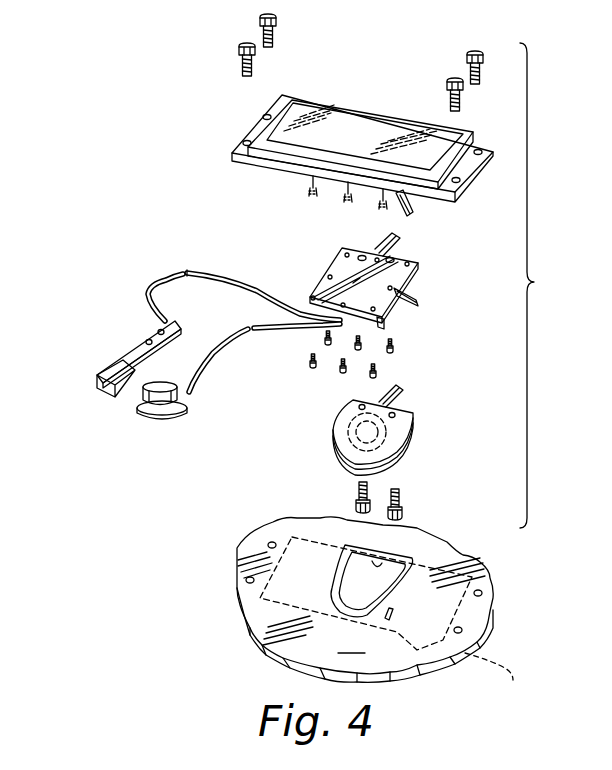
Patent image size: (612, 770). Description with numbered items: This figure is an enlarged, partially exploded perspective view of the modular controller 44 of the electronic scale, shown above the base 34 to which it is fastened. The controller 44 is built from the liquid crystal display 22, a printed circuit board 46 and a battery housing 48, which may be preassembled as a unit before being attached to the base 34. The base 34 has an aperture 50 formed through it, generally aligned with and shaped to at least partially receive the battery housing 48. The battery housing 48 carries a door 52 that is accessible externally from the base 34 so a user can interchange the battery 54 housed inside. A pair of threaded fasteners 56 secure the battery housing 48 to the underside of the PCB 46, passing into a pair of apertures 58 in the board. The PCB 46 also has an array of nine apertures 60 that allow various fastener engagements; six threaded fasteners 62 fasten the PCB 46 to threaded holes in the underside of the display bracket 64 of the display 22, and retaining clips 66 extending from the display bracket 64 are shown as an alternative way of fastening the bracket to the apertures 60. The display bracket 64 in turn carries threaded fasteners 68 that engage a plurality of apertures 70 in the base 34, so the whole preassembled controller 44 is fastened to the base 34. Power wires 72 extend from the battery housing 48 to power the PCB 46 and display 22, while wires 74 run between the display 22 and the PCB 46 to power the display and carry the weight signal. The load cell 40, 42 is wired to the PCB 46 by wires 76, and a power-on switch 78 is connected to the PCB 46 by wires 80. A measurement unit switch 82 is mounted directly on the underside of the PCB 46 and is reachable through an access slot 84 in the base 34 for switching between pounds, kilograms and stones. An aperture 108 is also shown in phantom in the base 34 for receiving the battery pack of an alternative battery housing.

The liquid crystal display 22 is at (363, 127).
The base 34 is at (351, 643).
The load cell 40 is at (175, 347).
The load cell 42 is at (122, 362).
The controller 44 is at (544, 285).
The printed circuit board 46 is at (415, 285).
The battery housing 48 is at (389, 419).
The aperture 50 is at (380, 564).
The door 52 is at (397, 465).
The battery 54 is at (414, 426).
The threaded fasteners 56 is at (402, 500).
The apertures 58 is at (392, 259).
The apertures 60 is at (409, 263).
The threaded fasteners 62 is at (394, 345).
The display bracket 64 is at (257, 166).
The retaining clips 66 is at (309, 196).
The threaded fasteners 68 is at (242, 62).
The apertures 70 is at (328, 599).
The power wires 72 is at (381, 393).
The wires 74 is at (383, 204).
The wires 76 is at (212, 270).
The power-on switch 78 is at (165, 420).
The wires 80 is at (212, 378).
The measurement unit switch 82 is at (385, 323).
The access slot 84 is at (396, 615).
The aperture 108 is at (499, 678).